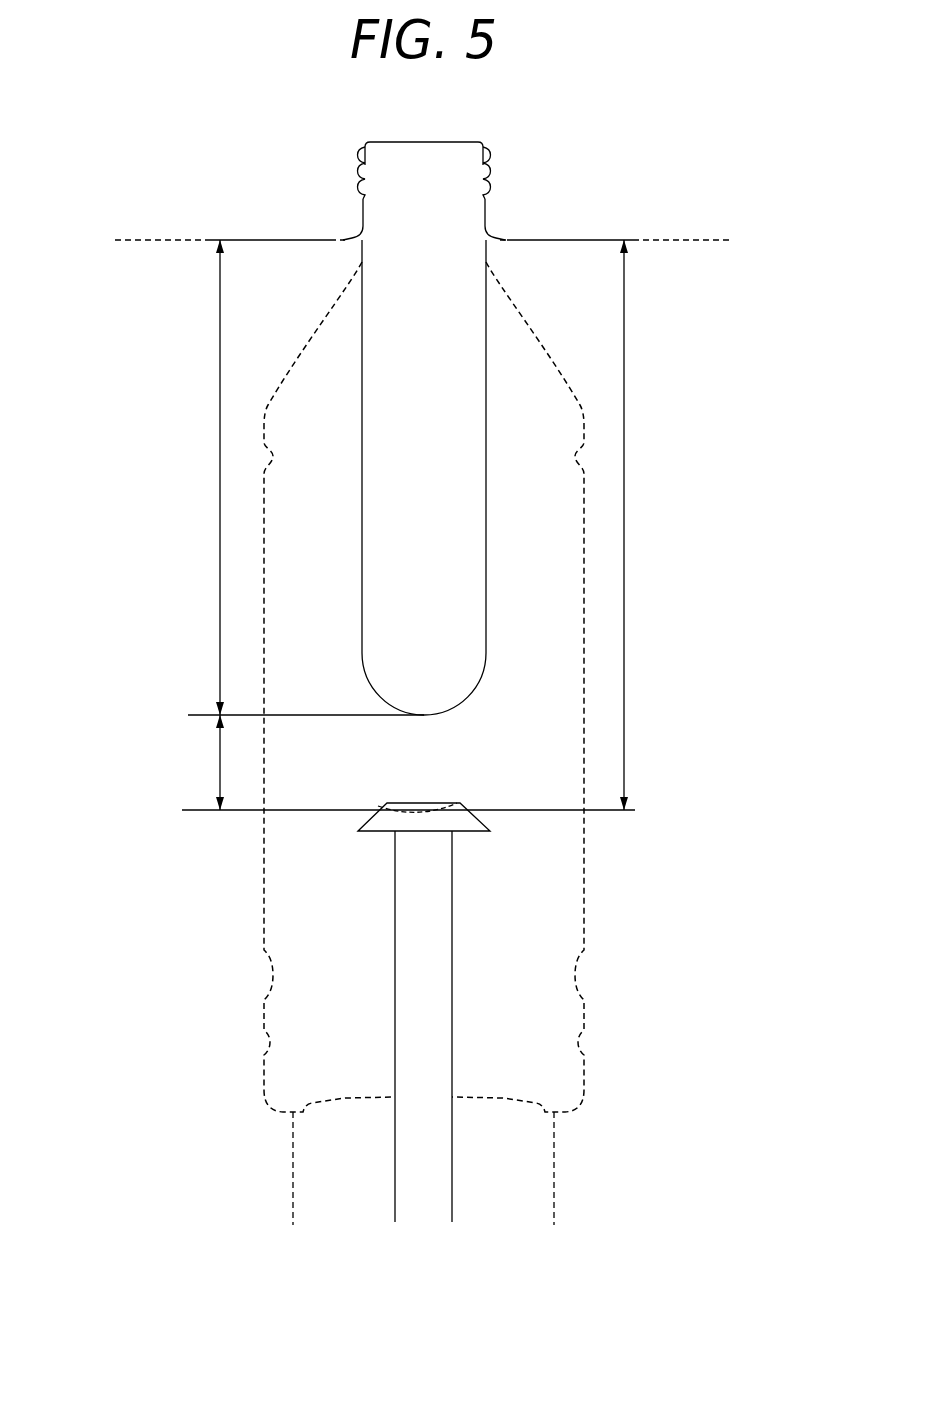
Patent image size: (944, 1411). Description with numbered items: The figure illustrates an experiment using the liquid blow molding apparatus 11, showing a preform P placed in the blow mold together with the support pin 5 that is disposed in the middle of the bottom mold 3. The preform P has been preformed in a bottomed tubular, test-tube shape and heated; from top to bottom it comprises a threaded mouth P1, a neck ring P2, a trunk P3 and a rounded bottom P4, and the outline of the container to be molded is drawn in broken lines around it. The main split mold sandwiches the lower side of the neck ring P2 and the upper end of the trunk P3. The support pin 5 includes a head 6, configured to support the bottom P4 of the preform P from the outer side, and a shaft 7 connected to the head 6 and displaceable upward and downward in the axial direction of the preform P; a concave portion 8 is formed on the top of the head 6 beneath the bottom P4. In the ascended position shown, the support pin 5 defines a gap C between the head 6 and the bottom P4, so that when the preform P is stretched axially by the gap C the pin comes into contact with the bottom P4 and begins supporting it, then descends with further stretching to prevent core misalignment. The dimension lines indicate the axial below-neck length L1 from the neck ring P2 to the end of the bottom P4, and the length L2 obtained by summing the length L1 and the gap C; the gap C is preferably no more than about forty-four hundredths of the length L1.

The liquid blow molding apparatus 11 is at (162, 230).
The preform P is at (460, 428).
The mouth P1 is at (487, 188).
The neck ring P2 is at (497, 237).
The trunk P3 is at (480, 534).
The bottom P4 is at (455, 698).
The support pin 5 is at (447, 982).
The head 6 is at (478, 820).
The shaft 7 is at (438, 900).
The concave portion 8 is at (408, 810).
The bottom mold 3 is at (340, 1180).
The axial length (below-neck length) L1 is at (195, 477).
The length L2 is at (651, 525).
The gap C is at (206, 762).